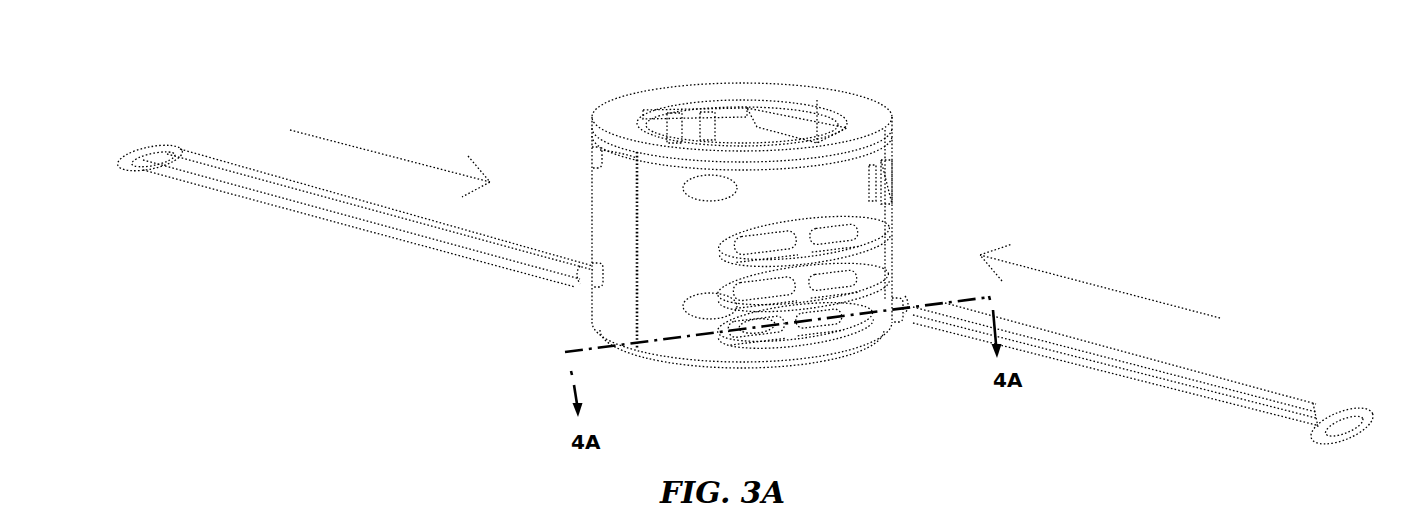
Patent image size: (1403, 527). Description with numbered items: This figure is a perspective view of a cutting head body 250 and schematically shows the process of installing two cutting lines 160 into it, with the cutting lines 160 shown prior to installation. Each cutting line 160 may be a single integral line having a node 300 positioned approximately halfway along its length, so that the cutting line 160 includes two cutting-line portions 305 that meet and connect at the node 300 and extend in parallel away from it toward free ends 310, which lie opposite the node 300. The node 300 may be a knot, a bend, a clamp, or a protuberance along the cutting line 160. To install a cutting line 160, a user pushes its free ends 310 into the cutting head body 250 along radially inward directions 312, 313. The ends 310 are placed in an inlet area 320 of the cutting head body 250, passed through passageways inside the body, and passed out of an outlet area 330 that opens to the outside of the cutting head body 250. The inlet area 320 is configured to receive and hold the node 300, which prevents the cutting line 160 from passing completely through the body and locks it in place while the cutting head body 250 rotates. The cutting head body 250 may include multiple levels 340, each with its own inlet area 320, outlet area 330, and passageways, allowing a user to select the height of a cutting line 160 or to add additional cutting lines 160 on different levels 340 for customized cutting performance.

The cutting line 160 is at (241, 198).
The cutting head body 250 is at (848, 100).
The node 300 is at (118, 158).
The cutting-line portion 305 is at (345, 196).
The free end 310 is at (577, 257).
The radially inward direction 312 is at (1102, 288).
The radially inward direction 313 is at (362, 150).
The inlet area 320 is at (581, 280).
The outlet area 330 is at (770, 341).
The level 340 is at (813, 242).